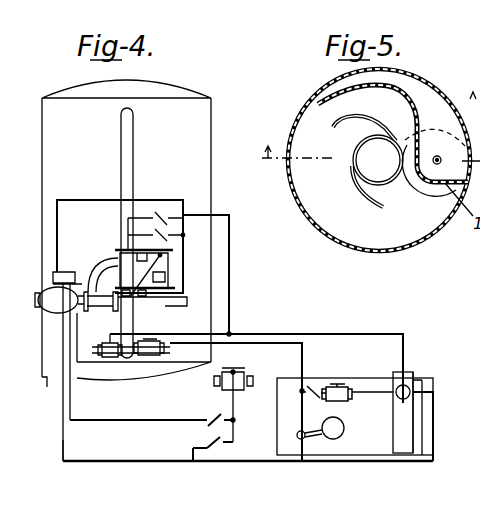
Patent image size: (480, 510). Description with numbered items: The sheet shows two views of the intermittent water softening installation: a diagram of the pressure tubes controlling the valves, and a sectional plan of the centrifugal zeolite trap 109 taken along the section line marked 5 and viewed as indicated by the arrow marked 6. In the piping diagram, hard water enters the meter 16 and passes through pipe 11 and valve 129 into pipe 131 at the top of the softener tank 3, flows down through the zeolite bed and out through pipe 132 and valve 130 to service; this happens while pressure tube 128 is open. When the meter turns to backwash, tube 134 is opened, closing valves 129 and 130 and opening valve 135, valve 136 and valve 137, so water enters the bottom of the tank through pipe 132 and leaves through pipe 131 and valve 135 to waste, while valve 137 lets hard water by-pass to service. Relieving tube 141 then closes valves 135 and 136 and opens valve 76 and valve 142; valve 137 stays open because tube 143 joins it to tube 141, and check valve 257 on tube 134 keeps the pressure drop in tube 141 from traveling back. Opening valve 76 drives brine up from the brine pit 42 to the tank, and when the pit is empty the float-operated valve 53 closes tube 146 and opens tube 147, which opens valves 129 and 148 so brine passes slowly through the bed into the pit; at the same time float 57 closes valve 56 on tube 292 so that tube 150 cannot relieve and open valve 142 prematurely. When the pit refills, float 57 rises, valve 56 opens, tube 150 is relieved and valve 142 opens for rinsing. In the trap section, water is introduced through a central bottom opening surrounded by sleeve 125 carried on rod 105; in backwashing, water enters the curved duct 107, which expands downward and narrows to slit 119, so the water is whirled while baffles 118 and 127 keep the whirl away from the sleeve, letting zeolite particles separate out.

In FIG. 4, the softener tank 3 is at (166, 90).
In FIG. 4, the pipe 131 is at (129, 313).
In FIG. 4, the pressure tube 128 is at (107, 199).
In FIG. 4, the valve 130 is at (166, 298).
In FIG. 4, the valve 135 is at (165, 262).
In FIG. 4, the valve 129 is at (103, 262).
In FIG. 4, the pipe 11 is at (100, 272).
In FIG. 4, the meter 16 is at (52, 290).
In FIG. 4, the valve 136 is at (130, 305).
In FIG. 4, the pipe 132 is at (124, 341).
In FIG. 4, the valve 148 is at (112, 353).
In FIG. 4, the valve 142 is at (152, 340).
In FIG. 4, the pressure tube 147 is at (350, 334).
In FIG. 4, the pressure tube 150 is at (244, 343).
In FIG. 4, the valve 137 is at (243, 380).
In FIG. 4, the pressure tube 134 is at (156, 420).
In FIG. 4, the check valve 257 is at (221, 420).
In FIG. 4, the tube 143 is at (192, 453).
In FIG. 4, the pressure tube 141 is at (63, 450).
In FIG. 4, the tube 292 is at (300, 445).
In FIG. 4, the brine pit 42 is at (369, 462).
In FIG. 4, the tube 146 is at (440, 418).
In FIG. 4, the valve 53 is at (417, 382).
In FIG. 4, the valve 76 is at (338, 384).
In FIG. 4, the float 57 is at (344, 428).
In FIG. 4, the valve 56 is at (297, 434).
In FIG. 5, the curved duct 107 is at (433, 97).
In FIG. 5, the zeolite trap 109 is at (407, 79).
In FIG. 5, the slit 119 is at (302, 110).
In FIG. 5, the sleeve 125 is at (388, 185).
In FIG. 5, the baffle 118 is at (333, 128).
In FIG. 5, the baffle 127 is at (355, 201).
In FIG. 5, the rod 105 is at (439, 157).
In FIG. 5, the section line 6 is at (371, 144).
In FIG. 5, the section line 5 is at (472, 107).